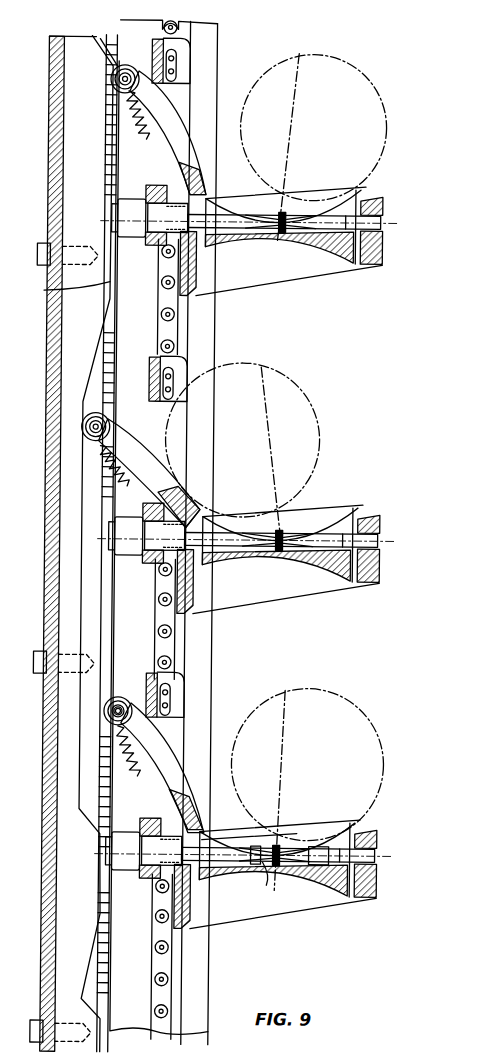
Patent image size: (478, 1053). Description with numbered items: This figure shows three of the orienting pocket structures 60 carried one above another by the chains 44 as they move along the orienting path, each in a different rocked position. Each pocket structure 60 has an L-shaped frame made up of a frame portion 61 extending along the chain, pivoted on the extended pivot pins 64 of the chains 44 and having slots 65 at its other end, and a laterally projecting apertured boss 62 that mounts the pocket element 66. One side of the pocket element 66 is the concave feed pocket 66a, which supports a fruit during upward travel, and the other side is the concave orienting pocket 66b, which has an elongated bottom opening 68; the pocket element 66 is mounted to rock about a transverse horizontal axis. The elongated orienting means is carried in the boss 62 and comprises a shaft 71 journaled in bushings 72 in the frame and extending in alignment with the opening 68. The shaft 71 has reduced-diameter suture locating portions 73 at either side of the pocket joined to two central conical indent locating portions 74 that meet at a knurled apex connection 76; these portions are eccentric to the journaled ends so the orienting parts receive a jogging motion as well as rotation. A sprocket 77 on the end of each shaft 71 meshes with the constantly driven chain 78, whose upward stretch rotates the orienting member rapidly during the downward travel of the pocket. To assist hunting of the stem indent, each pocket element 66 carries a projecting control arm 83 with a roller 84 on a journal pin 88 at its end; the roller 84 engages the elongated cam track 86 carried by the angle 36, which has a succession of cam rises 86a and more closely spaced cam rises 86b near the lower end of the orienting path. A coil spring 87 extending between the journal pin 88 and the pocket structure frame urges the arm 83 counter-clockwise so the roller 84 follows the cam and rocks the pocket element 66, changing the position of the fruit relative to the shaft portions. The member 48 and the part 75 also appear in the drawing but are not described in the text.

The angle 36 is at (50, 520).
The chains 44 is at (178, 305).
The guide bar 48 is at (214, 492).
The pocket structure 60 is at (0, 386).
The frame portion 61 is at (200, 100).
The boss 62 is at (327, 270).
The pivot pins 64 is at (172, 57).
The slots 65 is at (170, 70).
The pocket element 66 is at (337, 194).
The feed pocket 66a is at (244, 246).
The orienting pocket 66b is at (244, 197).
The bottom opening 68 is at (227, 840).
The shaft 71 is at (224, 232).
The bushings 72 is at (379, 880).
The suture locating portions 73 is at (321, 864).
The indent locating portions 74 is at (285, 210).
The pin 75 is at (259, 864).
The knurled apex connection 76 is at (273, 886).
The sprocket 77 is at (120, 210).
The chain 78 is at (105, 38).
The control arm 83 is at (168, 140).
The roller 84 is at (125, 68).
The cam track 86 is at (70, 775).
The cam rises 86a is at (42, 292).
The cam rises 86b is at (60, 655).
The coil spring 87 is at (127, 136).
The journal pin 88 is at (115, 716).